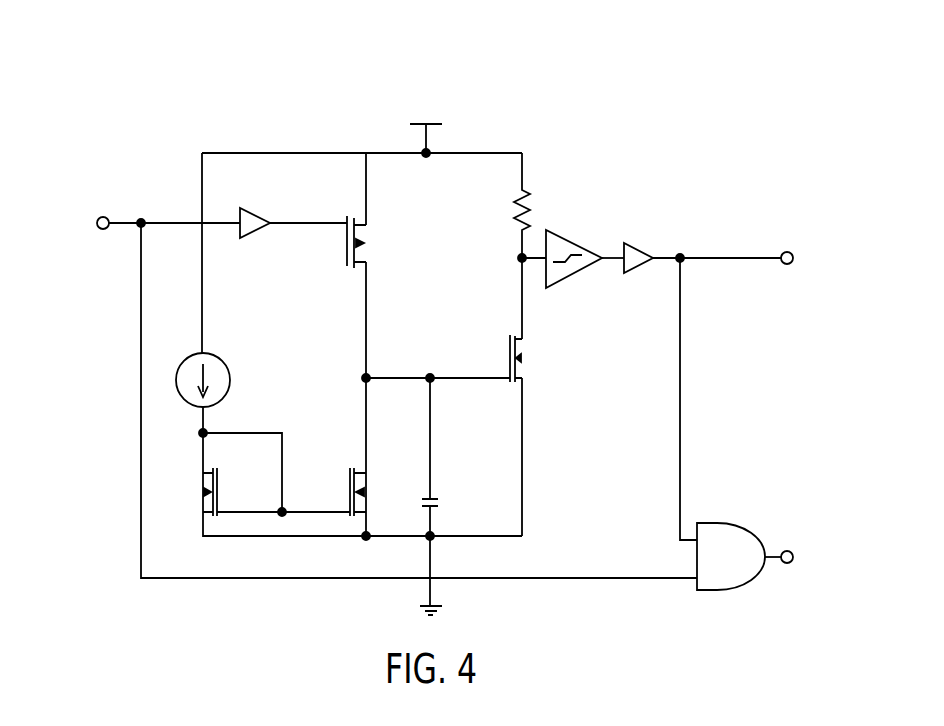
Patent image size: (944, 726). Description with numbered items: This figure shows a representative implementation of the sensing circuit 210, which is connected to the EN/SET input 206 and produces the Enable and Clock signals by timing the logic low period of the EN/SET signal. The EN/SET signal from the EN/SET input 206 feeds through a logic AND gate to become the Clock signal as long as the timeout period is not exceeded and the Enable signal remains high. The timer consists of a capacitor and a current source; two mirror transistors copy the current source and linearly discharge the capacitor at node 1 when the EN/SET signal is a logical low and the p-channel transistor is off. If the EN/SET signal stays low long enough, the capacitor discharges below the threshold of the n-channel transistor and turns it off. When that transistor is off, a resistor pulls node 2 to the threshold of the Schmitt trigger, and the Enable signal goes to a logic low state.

The EN/SET input 206 is at (146, 209).
The sensing circuit 210 is at (447, 336).
The node 1 is at (438, 363).
The node 2 is at (524, 252).